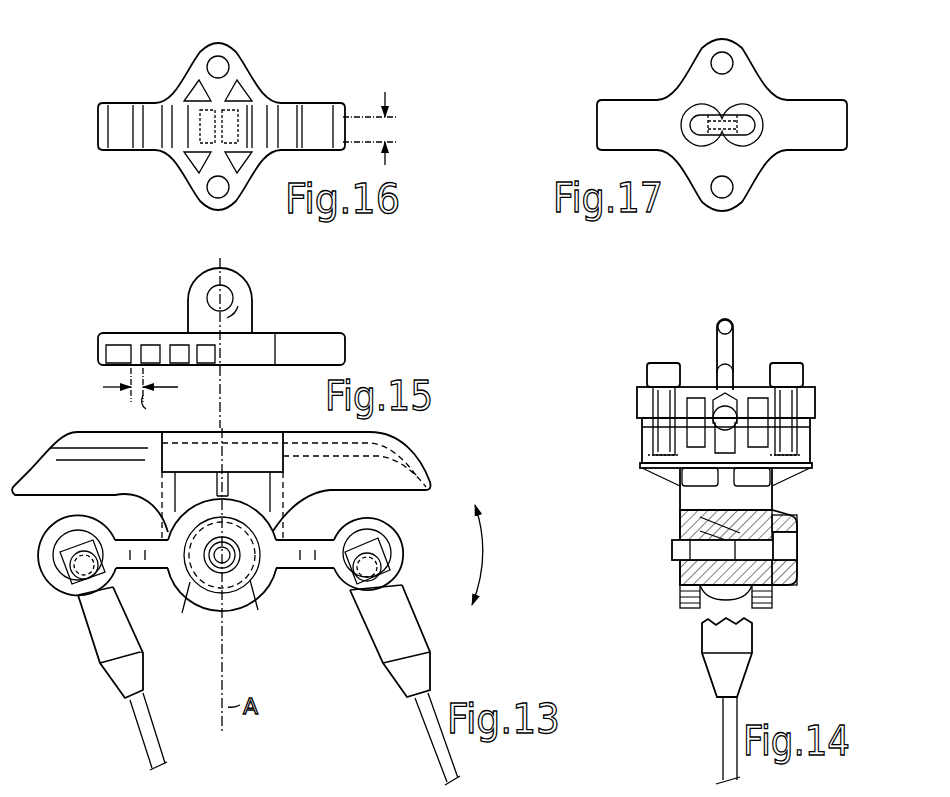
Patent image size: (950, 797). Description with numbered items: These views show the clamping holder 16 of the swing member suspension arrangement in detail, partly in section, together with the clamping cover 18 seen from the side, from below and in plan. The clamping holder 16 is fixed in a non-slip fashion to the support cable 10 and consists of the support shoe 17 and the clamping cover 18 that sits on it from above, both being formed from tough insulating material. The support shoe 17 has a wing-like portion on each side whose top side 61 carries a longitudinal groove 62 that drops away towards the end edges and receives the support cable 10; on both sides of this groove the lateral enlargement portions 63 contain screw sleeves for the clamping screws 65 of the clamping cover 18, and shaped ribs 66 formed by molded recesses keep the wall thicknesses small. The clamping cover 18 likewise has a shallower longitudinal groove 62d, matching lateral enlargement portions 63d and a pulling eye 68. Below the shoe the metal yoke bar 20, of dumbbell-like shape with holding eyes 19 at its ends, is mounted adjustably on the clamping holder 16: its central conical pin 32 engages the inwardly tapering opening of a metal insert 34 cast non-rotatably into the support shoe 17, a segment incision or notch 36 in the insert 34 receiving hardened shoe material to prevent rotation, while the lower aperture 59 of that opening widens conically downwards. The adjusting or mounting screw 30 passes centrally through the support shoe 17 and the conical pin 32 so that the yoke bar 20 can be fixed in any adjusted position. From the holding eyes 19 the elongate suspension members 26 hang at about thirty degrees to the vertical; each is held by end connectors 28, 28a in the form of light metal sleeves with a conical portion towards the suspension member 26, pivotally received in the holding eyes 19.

In FIG. 14, the support cable 10 is at (725, 412).
In FIG. 14, the clamping holder 16 is at (668, 585).
In FIG. 13, the support shoe 17 is at (421, 461).
In FIG. 14, the support shoe 17 is at (690, 477).
In FIG. 16, the clamping cover 18 is at (308, 85).
In FIG. 17, the clamping cover 18 is at (555, 139).
In FIG. 15, the clamping cover 18 is at (158, 306).
In FIG. 14, the clamping cover 18 is at (775, 336).
In FIG. 13, the holding eyes 19 is at (363, 537).
In FIG. 13, the yoke bar 20 is at (292, 570).
In FIG. 13, the elongate suspension members 26 is at (430, 742).
In FIG. 13, the end connector 28 is at (422, 664).
In FIG. 14, the end connector 28 is at (742, 665).
In FIG. 13, the cable housing 28a is at (77, 607).
In FIG. 13, the adjusting or mounting screw 30 is at (190, 608).
In FIG. 14, the adjusting or mounting screw 30 is at (792, 553).
In FIG. 13, the conical pin 32 is at (240, 612).
In FIG. 14, the conical pin 32 is at (778, 522).
In FIG. 13, the metal insert 34 is at (184, 579).
In FIG. 14, the metal insert 34 is at (676, 533).
In FIG. 14, the segment incision or notch 36 is at (678, 518).
In FIG. 14, the lower aperture 59 is at (703, 598).
In FIG. 13, the top side 61 is at (36, 467).
In FIG. 15, the longitudinal groove 62 is at (103, 387).
In FIG. 14, the longitudinal groove 62 is at (740, 447).
In FIG. 16, the longitudinal groove 62d is at (119, 120).
In FIG. 13, the lateral enlargement portions 63 is at (236, 455).
In FIG. 14, the lateral enlargement portions 63 is at (783, 487).
In FIG. 16, the lateral enlargement portions 63d is at (228, 205).
In FIG. 17, the lateral enlargement portions 63d is at (684, 82).
In FIG. 14, the lateral enlargement portions 63d is at (640, 405).
In FIG. 14, the clamping screws 65 is at (647, 375).
In FIG. 16, the shaped ribs 66 is at (340, 130).
In FIG. 17, the pulling eye 68 is at (725, 112).
In FIG. 15, the pulling eye 68 is at (250, 297).
In FIG. 14, the pulling eye 68 is at (705, 335).